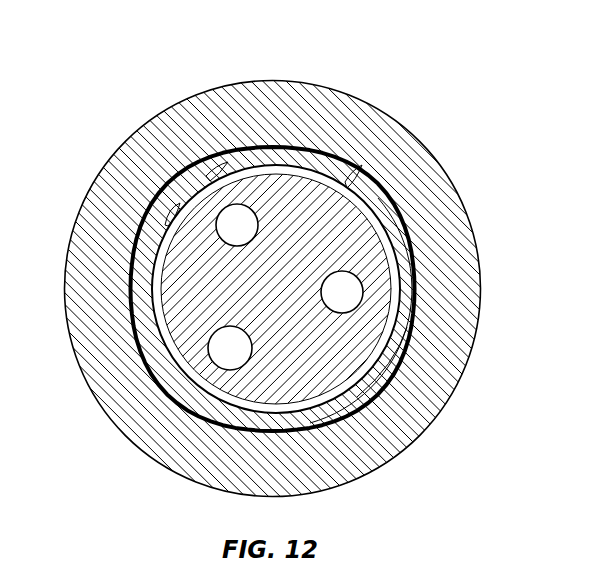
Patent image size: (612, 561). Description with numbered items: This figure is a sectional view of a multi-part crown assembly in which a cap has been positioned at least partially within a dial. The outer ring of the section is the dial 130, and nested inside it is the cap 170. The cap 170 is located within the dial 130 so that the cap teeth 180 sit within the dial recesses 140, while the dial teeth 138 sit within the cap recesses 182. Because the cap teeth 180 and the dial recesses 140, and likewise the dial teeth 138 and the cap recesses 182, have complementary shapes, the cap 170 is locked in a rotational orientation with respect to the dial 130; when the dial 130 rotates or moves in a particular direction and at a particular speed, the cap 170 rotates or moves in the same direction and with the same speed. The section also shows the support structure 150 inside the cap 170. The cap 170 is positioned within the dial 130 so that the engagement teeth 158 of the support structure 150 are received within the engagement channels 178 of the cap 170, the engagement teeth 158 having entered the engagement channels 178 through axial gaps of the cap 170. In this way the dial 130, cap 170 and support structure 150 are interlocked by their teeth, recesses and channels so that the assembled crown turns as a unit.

The dial 130 is at (482, 263).
The dial teeth 138 is at (273, 150).
The dial recesses 140 is at (366, 200).
The support structure 150 is at (385, 425).
The engagement teeth 158 is at (222, 165).
The cap 170 is at (403, 378).
The engagement channels 178 is at (130, 199).
The cap teeth 180 is at (405, 222).
The cap recesses 182 is at (252, 208).